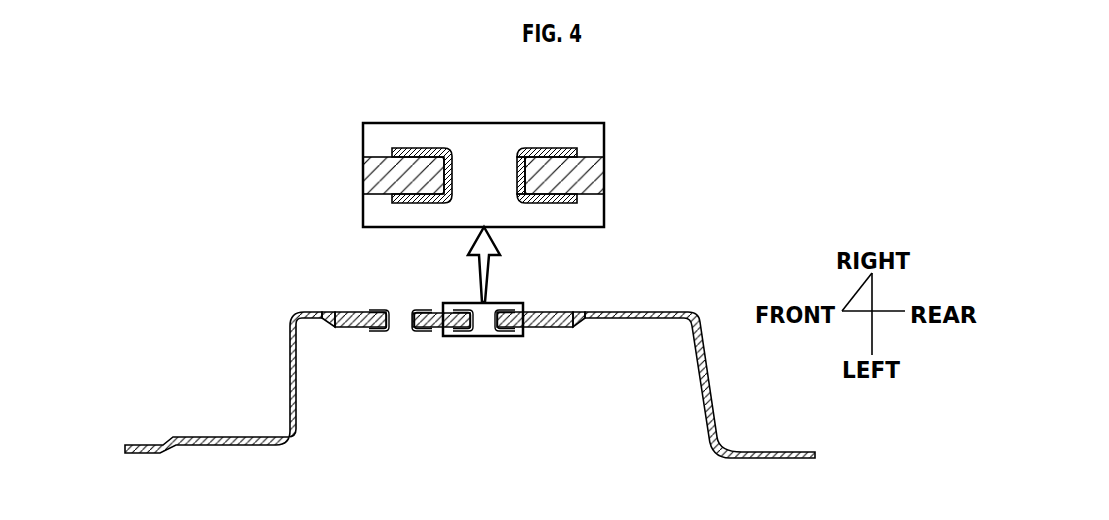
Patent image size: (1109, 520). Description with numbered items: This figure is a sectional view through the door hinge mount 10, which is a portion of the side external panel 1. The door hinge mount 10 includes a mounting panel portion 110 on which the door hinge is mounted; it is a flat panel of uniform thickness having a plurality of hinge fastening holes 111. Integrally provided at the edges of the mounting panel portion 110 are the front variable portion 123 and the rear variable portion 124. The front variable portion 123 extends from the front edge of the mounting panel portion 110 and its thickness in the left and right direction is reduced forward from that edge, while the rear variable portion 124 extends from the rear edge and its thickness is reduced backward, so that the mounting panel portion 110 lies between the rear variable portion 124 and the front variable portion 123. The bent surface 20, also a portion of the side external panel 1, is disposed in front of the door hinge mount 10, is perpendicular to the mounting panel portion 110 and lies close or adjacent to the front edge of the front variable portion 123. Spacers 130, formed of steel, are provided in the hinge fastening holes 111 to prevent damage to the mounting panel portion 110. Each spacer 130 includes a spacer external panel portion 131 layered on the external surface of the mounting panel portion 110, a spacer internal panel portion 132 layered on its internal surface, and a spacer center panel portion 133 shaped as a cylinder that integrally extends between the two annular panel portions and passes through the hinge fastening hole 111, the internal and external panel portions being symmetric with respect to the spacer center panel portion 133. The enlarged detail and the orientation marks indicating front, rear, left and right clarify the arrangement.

The side external panel 1 is at (231, 346).
The door hinge mount 10 is at (336, 310).
The bent surface 20 is at (292, 399).
The mounting panel portion 110 is at (540, 328).
The hinge fastening holes 111 is at (477, 311).
The front variable portion 123 is at (334, 328).
The rear variable portion 124 is at (577, 327).
The spacers 130 is at (456, 331).
The spacer external panel portion 131 is at (547, 145).
The spacer internal panel portion 132 is at (552, 200).
The spacer center panel portion 133 is at (516, 170).